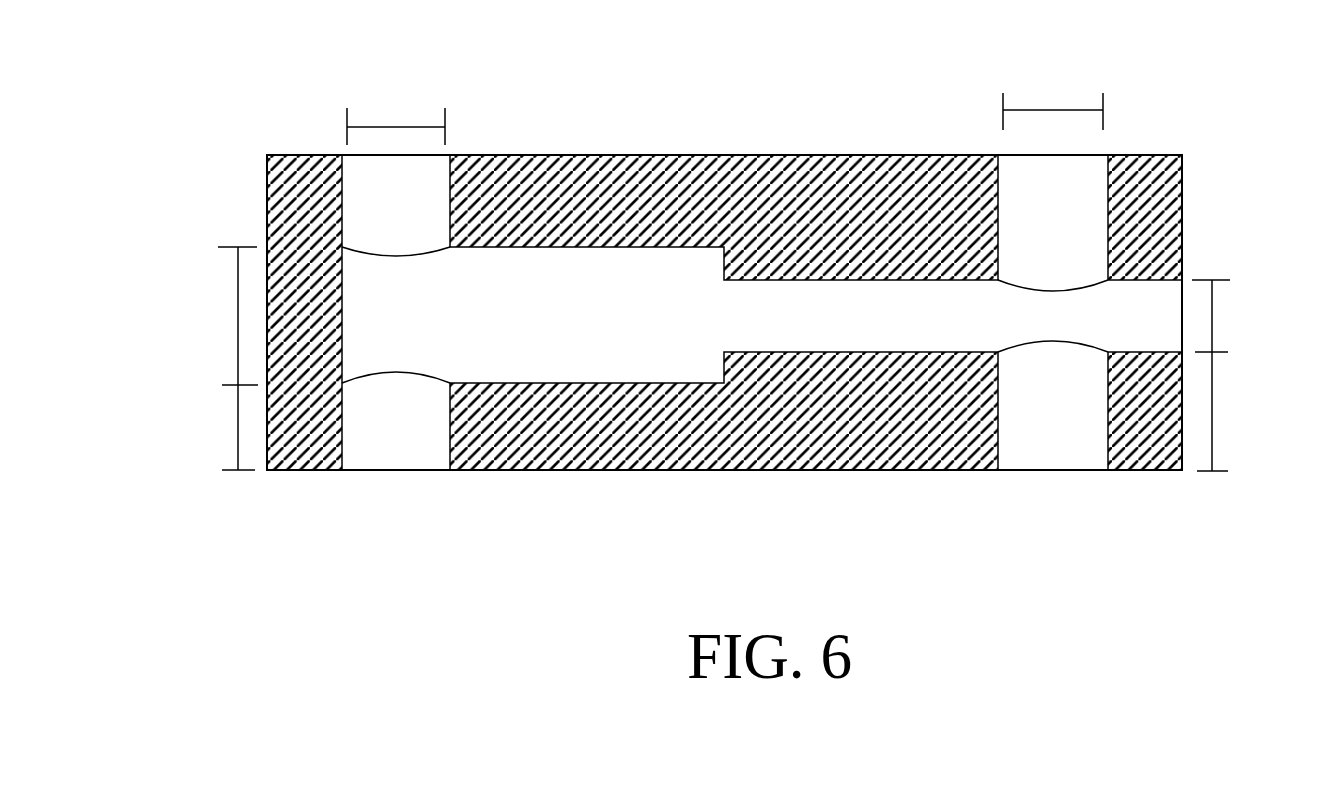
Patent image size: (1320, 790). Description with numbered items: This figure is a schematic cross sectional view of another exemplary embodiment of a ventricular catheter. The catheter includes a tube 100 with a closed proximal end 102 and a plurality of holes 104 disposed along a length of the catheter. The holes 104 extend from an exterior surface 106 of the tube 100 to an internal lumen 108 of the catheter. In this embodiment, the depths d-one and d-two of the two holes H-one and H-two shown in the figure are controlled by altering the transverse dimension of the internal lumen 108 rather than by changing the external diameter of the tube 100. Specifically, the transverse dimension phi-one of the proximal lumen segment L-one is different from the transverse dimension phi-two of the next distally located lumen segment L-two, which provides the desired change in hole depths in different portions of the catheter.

The tube 100 is at (282, 124).
The closed proximal end 102 is at (267, 470).
The holes 104 is at (1015, 155).
The exterior surface 106 is at (828, 155).
The internal lumen 108 is at (443, 358).